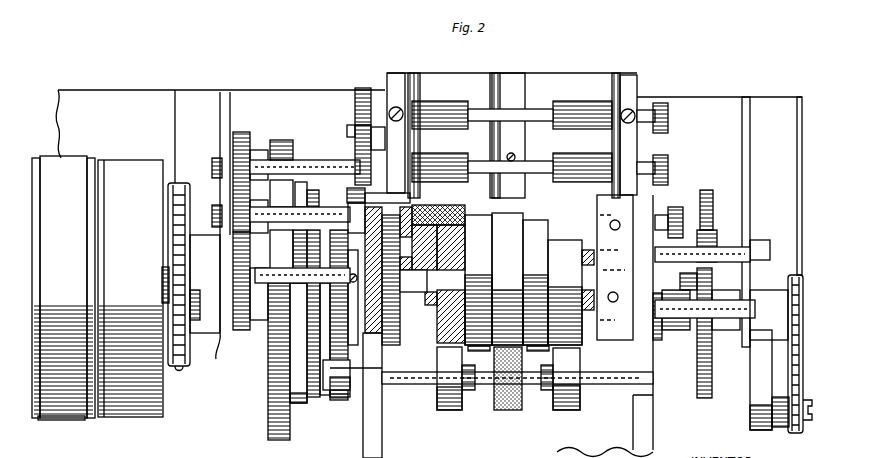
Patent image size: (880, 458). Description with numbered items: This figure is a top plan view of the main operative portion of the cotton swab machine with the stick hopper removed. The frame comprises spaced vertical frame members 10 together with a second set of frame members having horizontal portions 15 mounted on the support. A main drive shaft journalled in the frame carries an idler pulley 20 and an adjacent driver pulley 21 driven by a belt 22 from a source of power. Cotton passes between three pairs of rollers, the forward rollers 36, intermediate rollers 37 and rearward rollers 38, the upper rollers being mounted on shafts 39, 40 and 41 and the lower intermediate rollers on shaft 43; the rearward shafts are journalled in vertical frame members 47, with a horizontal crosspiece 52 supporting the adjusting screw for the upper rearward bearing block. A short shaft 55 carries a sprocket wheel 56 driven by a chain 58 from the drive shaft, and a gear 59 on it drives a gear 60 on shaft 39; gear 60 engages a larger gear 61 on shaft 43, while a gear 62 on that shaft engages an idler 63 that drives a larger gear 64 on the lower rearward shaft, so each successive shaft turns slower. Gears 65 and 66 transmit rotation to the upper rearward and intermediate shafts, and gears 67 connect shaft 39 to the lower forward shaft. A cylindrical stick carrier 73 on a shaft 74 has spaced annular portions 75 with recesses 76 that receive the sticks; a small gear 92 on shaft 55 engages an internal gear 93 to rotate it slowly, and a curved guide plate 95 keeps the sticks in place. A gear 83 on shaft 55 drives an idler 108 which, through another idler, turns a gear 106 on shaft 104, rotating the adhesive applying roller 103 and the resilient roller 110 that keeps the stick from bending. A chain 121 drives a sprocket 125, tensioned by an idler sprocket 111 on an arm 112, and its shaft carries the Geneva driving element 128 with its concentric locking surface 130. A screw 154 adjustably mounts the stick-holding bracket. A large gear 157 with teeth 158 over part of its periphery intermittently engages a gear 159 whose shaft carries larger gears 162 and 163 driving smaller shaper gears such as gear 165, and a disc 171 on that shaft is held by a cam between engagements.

The vertical frame members 10 is at (365, 445).
The horizontal portions 15 is at (198, 100).
The idler pulley 20 is at (38, 158).
The driver pulley 21 is at (128, 165).
The belt 22 is at (80, 420).
The forward rollers 36 is at (462, 205).
The intermediate rollers 37 is at (458, 156).
The rearward rollers 38 is at (455, 105).
The shaft 39 is at (322, 212).
The shaft 40 is at (537, 162).
The shaft 41 is at (507, 110).
The shaft 43 is at (316, 160).
The vertical frame members 47 is at (397, 78).
The horizontal crosspiece 52 is at (640, 94).
The short shaft 55 is at (284, 268).
The sprocket wheel 56 is at (190, 190).
The chain 58 is at (186, 368).
The gear 59 is at (240, 330).
The gear 60 is at (240, 190).
The gear 61 is at (242, 134).
The gear 62 is at (382, 192).
The idler 63 is at (352, 129).
The gear 64 is at (365, 88).
The gears 65 is at (668, 112).
The gears 66 is at (668, 172).
The gears 67 is at (680, 212).
The cylindrical stick carrier 73 is at (519, 251).
The shaft 74 is at (420, 290).
The annular portions 75 is at (486, 261).
The recesses 76 is at (527, 279).
The gear 83 is at (350, 325).
The small gear 92 is at (420, 252).
The internal gear 93 is at (442, 245).
The curved guide plate 95 is at (565, 353).
The applying roller 103 is at (456, 408).
The shaft 104 is at (428, 387).
The gear 106 is at (345, 400).
The idler 108 is at (350, 340).
The resilient roller 110 is at (514, 410).
The idler sprocket 111 is at (794, 432).
The arm 112 is at (755, 398).
The chain 121 is at (792, 362).
The sprocket 125 is at (791, 270).
The driving element 128 is at (713, 340).
The concentric locking surface 130 is at (683, 338).
The screw 154 is at (512, 157).
The large gear 157 is at (270, 425).
The teeth 158 is at (285, 140).
The gear 159 is at (283, 322).
The gear 162 is at (314, 397).
The gear 163 is at (708, 190).
The gear 165 is at (710, 238).
The disc 171 is at (300, 405).